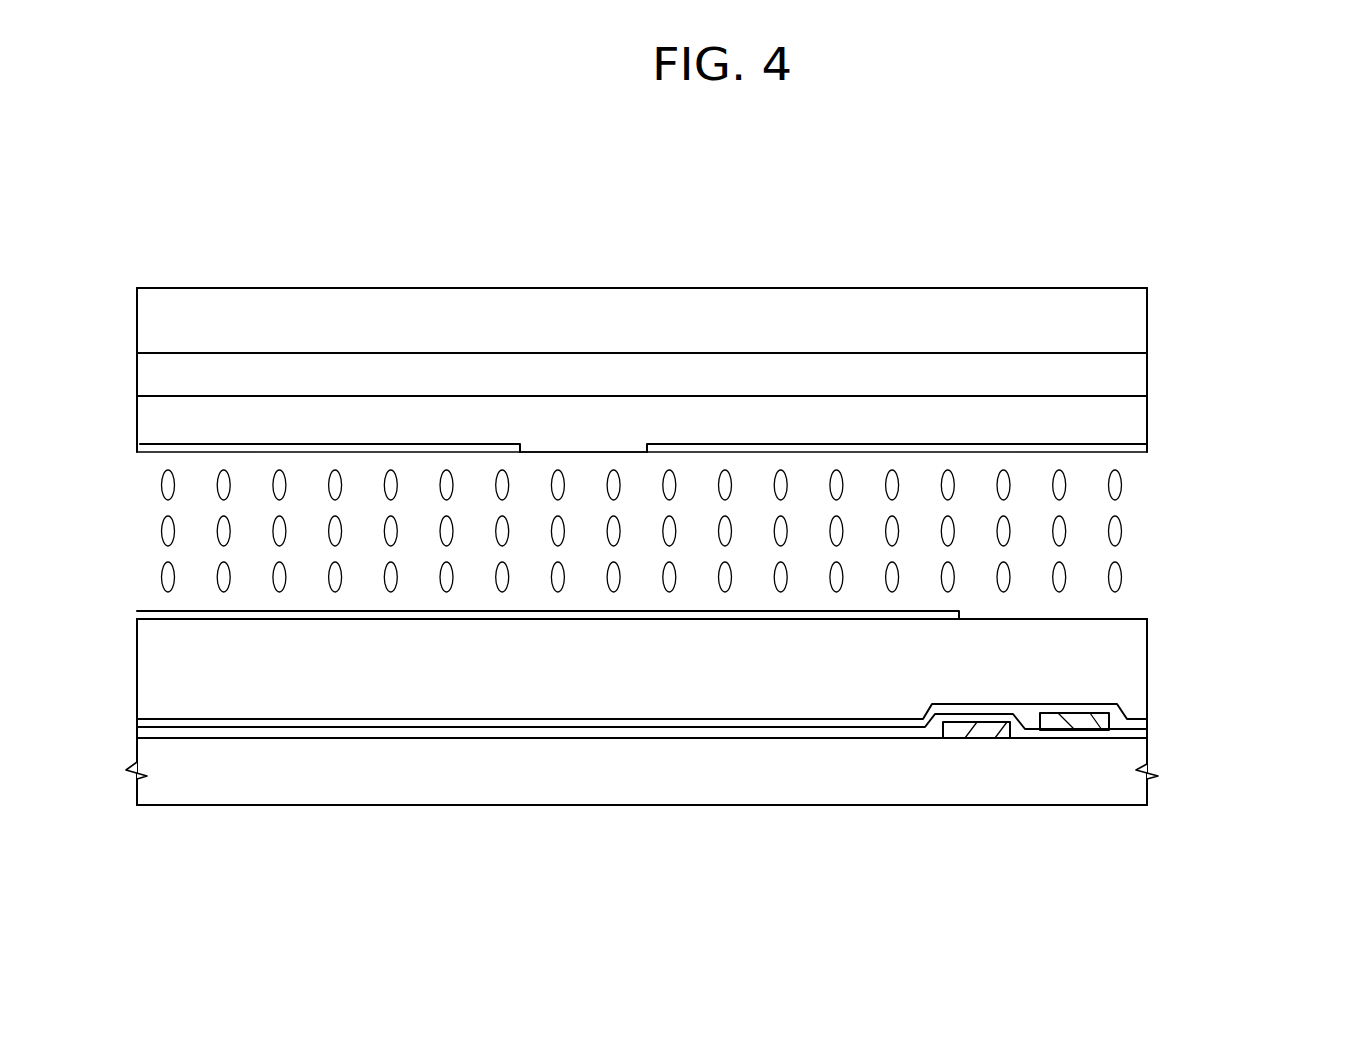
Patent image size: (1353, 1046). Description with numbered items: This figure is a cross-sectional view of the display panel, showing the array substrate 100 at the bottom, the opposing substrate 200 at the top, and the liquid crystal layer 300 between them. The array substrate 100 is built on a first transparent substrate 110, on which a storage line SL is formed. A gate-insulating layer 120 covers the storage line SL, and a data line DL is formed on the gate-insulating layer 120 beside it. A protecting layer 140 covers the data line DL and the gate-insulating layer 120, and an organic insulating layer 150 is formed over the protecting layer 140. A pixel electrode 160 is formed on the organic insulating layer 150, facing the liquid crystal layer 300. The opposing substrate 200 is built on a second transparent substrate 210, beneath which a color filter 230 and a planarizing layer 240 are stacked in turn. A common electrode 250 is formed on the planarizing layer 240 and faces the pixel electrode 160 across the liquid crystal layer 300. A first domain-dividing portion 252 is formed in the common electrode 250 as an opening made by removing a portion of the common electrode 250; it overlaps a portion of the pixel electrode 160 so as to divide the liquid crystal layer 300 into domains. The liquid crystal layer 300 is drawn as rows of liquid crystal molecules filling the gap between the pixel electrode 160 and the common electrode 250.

The array substrate 100 is at (1252, 708).
The first transparent substrate 110 is at (1150, 777).
The gate-insulating layer 120 is at (1147, 738).
The protecting layer 140 is at (1147, 720).
The organic insulating layer 150 is at (1141, 673).
The pixel electrode 160 is at (1141, 613).
The opposing substrate 200 is at (1252, 376).
The second transparent substrate 210 is at (1141, 328).
The color filter 230 is at (1141, 372).
The planarizing layer 240 is at (1141, 420).
The common electrode 250 is at (147, 445).
The first domain-dividing portion 252 is at (585, 450).
The liquid crystal layer 300 is at (1126, 533).
The storage line SL is at (976, 738).
The data line DL is at (1072, 730).